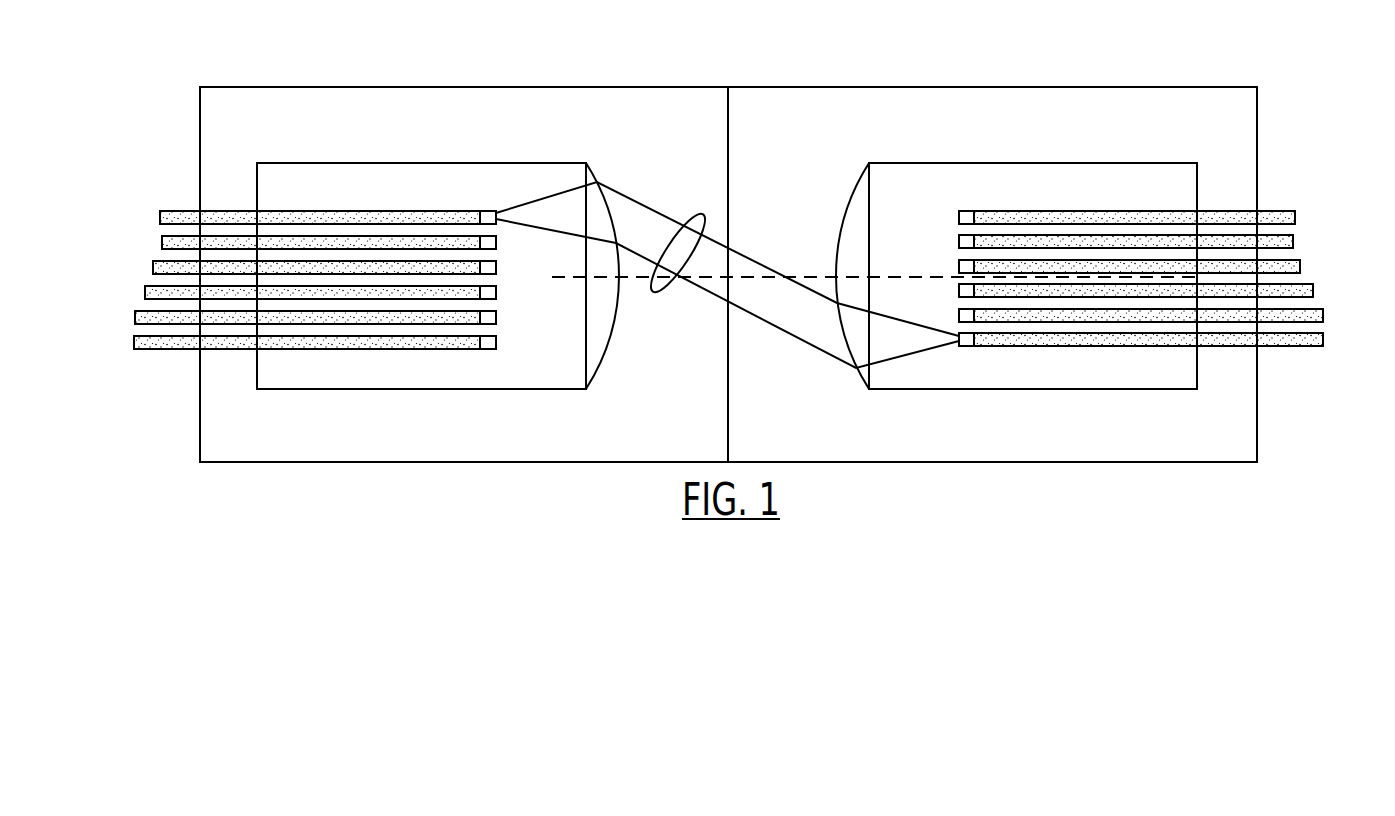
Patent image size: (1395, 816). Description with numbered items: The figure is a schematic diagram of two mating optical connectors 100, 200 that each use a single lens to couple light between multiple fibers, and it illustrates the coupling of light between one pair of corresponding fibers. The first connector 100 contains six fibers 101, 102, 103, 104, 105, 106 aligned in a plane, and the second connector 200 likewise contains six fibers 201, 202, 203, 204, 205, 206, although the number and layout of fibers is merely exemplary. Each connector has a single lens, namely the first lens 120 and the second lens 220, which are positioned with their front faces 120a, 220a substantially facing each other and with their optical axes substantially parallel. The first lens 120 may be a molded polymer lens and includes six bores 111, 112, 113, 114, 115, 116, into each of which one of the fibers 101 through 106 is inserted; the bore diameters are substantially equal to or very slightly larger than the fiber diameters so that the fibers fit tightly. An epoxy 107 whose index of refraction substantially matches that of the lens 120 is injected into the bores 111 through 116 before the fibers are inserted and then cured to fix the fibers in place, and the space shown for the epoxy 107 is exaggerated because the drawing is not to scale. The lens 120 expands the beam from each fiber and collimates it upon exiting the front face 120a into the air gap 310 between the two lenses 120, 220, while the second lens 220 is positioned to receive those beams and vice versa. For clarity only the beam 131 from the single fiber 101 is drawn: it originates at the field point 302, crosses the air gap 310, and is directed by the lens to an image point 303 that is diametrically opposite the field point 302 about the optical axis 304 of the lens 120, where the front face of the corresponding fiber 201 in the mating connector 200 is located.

The connector 100 is at (481, 87).
The connector 200 is at (973, 87).
The fiber 101 is at (162, 213).
The fiber 102 is at (164, 238).
The fiber 103 is at (155, 263).
The fiber 104 is at (147, 288).
The fiber 105 is at (137, 313).
The fiber 106 is at (136, 338).
The epoxy 107 is at (497, 217).
The bore 111 is at (373, 210).
The bore 112 is at (469, 249).
The bore 113 is at (469, 274).
The bore 114 is at (469, 299).
The bore 115 is at (469, 324).
The bore 116 is at (469, 349).
The lens 120 is at (447, 272).
The front face 120a is at (591, 379).
The beam 131 is at (689, 216).
The fiber 201 is at (1325, 337).
The fiber 202 is at (1325, 312).
The fiber 203 is at (1315, 286).
The fiber 204 is at (1302, 263).
The fiber 205 is at (1295, 238).
The fiber 206 is at (1297, 213).
The lens 220 is at (1008, 271).
The front face 220a is at (862, 377).
The field point 302 is at (481, 213).
The image point 303 is at (990, 347).
The optical axis 304 is at (802, 277).
The air gap 310 is at (766, 176).